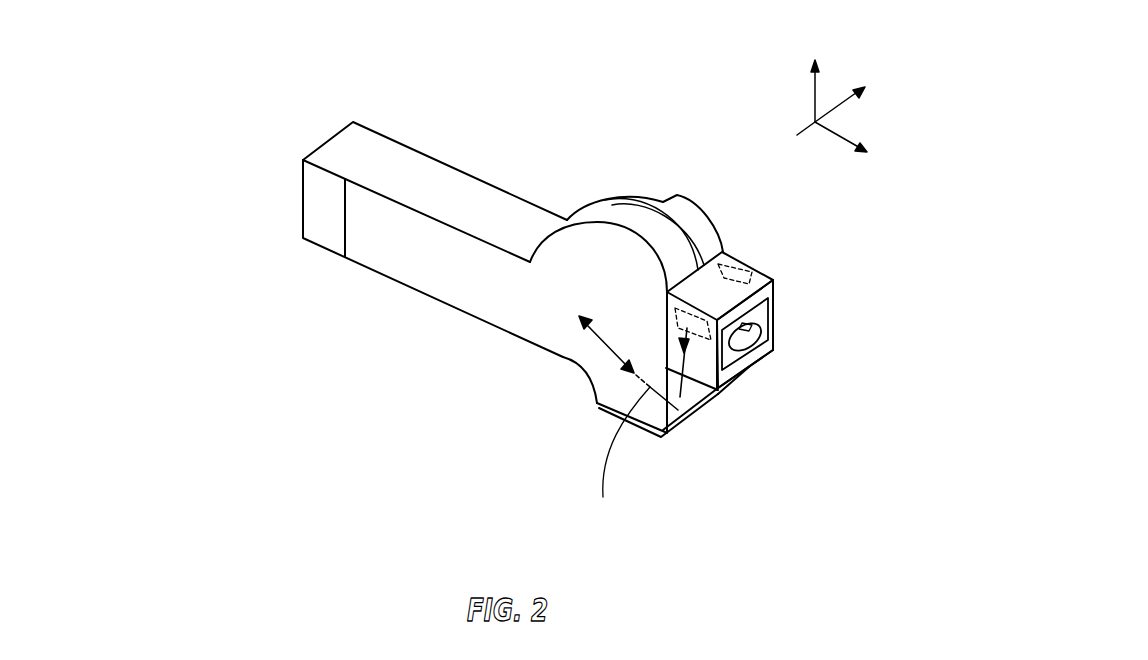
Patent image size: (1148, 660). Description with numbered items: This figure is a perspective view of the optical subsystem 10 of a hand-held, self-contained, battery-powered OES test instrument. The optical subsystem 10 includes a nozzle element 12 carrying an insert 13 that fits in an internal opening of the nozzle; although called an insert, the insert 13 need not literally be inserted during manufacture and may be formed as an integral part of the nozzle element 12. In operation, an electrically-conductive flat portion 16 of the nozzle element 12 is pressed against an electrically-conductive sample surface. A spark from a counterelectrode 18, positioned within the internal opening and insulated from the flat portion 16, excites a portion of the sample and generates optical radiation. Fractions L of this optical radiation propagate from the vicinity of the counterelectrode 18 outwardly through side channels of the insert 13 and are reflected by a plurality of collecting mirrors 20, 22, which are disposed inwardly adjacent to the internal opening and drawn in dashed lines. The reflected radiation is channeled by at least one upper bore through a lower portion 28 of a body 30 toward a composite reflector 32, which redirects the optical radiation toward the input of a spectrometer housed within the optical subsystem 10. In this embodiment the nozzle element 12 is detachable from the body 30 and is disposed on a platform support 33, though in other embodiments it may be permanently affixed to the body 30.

The optical subsystem 10 is at (599, 300).
The nozzle element 12 is at (723, 253).
The insert 13 is at (743, 360).
The electrically-conductive flat portion 16 is at (768, 345).
The counterelectrode 18 is at (750, 327).
The collecting mirror 20 is at (735, 268).
The collecting mirror 22 is at (673, 308).
The lower portion 28 is at (588, 357).
The body 30 is at (445, 180).
The composite reflector 32 is at (658, 437).
The platform support 33 is at (715, 393).
The fractions of the optical radiation L is at (632, 367).